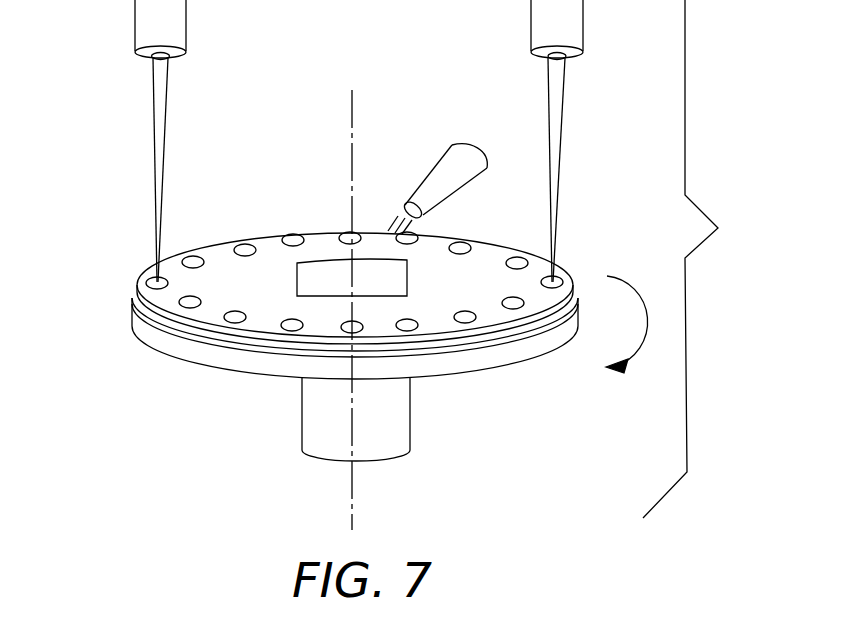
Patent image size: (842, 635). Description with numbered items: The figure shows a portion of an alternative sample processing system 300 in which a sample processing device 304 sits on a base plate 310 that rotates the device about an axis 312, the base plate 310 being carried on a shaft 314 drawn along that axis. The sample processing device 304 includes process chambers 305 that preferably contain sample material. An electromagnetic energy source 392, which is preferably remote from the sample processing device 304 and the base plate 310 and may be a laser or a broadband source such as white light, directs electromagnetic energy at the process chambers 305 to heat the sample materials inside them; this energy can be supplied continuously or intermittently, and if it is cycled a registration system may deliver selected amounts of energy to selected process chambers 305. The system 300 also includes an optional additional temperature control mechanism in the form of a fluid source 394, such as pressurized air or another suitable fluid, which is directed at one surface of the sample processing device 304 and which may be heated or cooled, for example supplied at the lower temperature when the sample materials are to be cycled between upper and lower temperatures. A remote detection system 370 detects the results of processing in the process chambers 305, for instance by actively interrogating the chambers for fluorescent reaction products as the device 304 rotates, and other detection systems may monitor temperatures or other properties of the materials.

The sample processing system 300 is at (690, 259).
The sample processing device 304 is at (257, 335).
The process chambers 305 is at (233, 318).
The base plate 310 is at (437, 363).
The axis 312 is at (351, 182).
The drive shaft 314 is at (328, 418).
The remote detection system 370 is at (562, 130).
The electromagnetic energy source 392 is at (153, 128).
The fluid source 394 is at (438, 175).